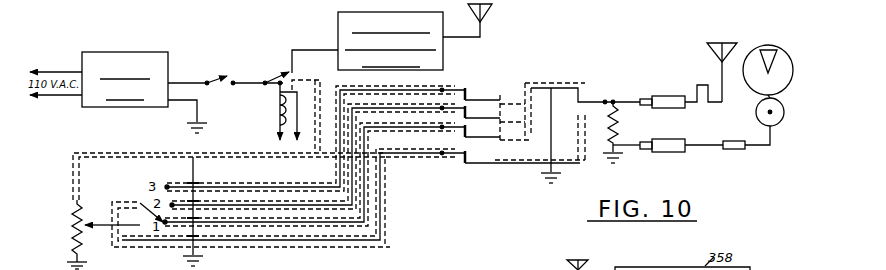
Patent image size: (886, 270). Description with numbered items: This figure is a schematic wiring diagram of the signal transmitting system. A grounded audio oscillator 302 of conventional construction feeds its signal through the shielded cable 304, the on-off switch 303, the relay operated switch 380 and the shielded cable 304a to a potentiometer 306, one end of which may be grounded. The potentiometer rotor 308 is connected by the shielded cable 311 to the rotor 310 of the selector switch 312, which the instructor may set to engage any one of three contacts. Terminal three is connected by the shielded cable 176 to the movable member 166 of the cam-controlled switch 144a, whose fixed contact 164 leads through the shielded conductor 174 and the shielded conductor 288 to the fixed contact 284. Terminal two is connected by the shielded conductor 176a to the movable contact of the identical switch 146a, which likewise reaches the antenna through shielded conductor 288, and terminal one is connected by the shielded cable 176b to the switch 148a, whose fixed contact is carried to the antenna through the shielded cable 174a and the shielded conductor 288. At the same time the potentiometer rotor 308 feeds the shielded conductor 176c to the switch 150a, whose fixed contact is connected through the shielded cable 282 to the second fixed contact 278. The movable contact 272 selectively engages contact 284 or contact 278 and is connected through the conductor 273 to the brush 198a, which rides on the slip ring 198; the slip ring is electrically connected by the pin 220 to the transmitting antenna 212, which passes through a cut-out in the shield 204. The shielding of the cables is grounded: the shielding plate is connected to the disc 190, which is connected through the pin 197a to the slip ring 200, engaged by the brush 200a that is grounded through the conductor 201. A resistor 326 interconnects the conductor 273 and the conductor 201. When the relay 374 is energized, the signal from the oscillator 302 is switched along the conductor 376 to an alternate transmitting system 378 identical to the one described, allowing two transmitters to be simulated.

The audio oscillator 302 is at (168, 62).
The on-off switch 303 is at (229, 77).
The shielded cable 304 is at (198, 85).
The shielded cable 304a is at (117, 155).
The potentiometer 306 is at (73, 216).
The potentiometer rotor 308 is at (98, 228).
The rotor 310 is at (143, 227).
The shielded cable 311 is at (112, 202).
The selector switch 312 is at (147, 186).
The relay 374 is at (276, 118).
The conductor 376 is at (292, 50).
The alternate transmitting system 378 is at (340, 21).
The relay operated switch 380 is at (291, 76).
The shielded cable 176 is at (205, 188).
The shielded conductor 176a is at (257, 204).
The shielded cable 176b is at (242, 224).
The shielded conductor 176c is at (282, 243).
The movable member 166 is at (452, 88).
The fixed contact 164 is at (470, 96).
The switch 144a is at (479, 95).
The switch 146a is at (483, 111).
The switch 148a is at (456, 134).
The switch 150a is at (459, 150).
The shielded conductor 174 is at (521, 103).
The shielded cable 174a is at (540, 152).
The shielded cable 282 is at (520, 163).
The shielded conductor 288 is at (533, 86).
The second fixed contact 278 is at (580, 113).
The fixed contact 284 is at (582, 89).
The movable contact 272 is at (593, 100).
The resistor 326 is at (610, 120).
The conductor 273 is at (618, 104).
The conductor 201 is at (619, 148).
The brush 198a is at (643, 98).
The slip ring 198 is at (665, 107).
The pin 220 is at (700, 86).
The antenna 212 is at (722, 92).
The shield 204 is at (757, 61).
The disc 190 is at (757, 115).
The pin 197a is at (740, 149).
The slip ring 200 is at (672, 152).
The brush 200a is at (643, 150).